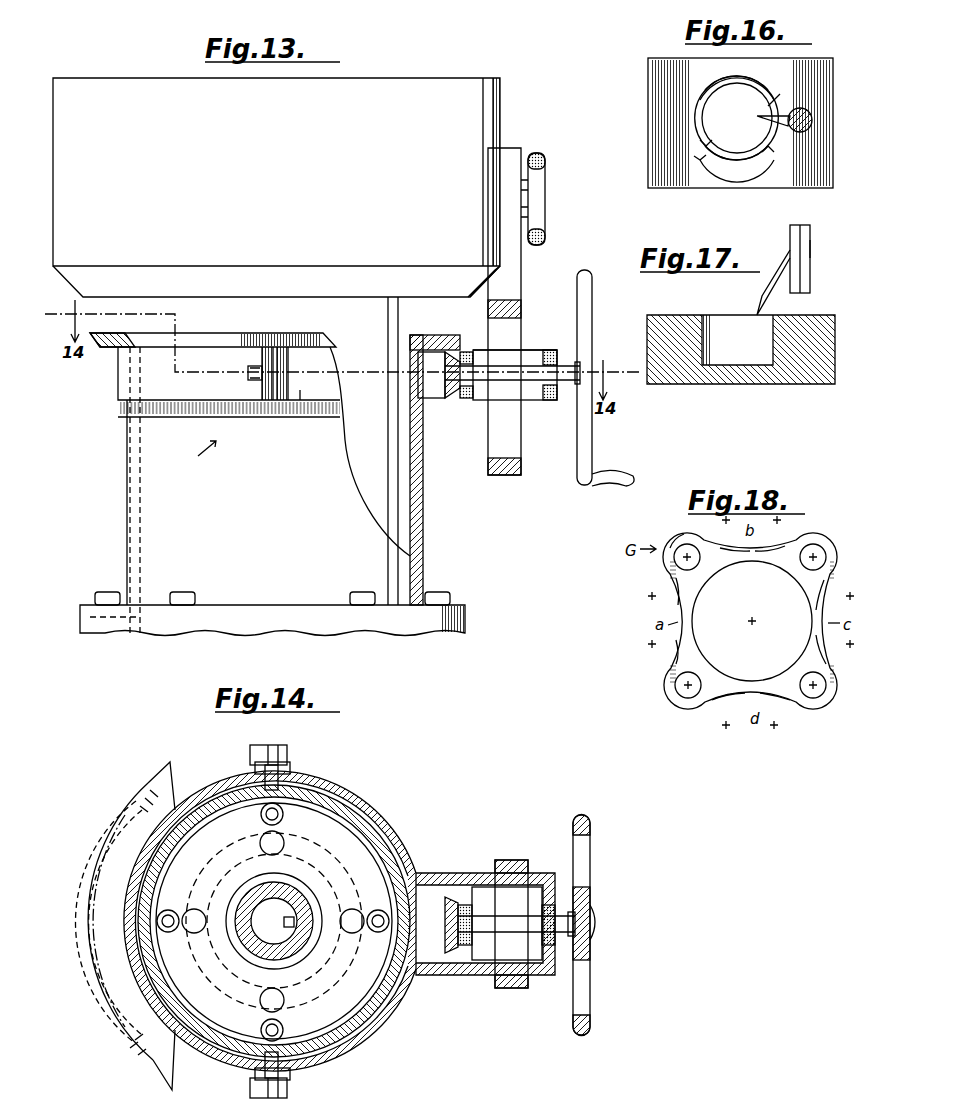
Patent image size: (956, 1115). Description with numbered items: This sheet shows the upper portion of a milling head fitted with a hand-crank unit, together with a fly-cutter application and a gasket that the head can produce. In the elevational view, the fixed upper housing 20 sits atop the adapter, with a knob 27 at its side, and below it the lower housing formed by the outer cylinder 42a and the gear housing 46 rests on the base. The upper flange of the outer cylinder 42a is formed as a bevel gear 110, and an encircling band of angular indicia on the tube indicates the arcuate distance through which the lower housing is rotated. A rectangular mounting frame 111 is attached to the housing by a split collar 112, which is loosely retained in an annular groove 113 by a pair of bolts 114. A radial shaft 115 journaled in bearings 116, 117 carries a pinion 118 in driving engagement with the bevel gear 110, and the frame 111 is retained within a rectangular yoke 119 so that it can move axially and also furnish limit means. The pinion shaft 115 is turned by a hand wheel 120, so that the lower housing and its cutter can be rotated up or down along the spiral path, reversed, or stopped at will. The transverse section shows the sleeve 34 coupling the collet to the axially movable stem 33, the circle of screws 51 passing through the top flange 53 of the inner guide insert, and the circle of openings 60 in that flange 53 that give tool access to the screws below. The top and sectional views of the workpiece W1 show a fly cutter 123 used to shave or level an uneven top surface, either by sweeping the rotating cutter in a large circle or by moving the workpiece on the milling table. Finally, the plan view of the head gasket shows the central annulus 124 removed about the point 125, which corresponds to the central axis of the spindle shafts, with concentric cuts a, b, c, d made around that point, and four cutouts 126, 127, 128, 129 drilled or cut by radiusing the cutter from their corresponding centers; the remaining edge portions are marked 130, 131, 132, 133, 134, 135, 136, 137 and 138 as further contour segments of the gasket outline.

In FIG. 13, the housing 20 is at (53, 160).
In FIG. 13, the knob 27 is at (542, 158).
In FIG. 13, the outer cylinder 42a is at (423, 497).
In FIG. 13, the gear housing 46 is at (80, 615).
In FIG. 13, the bevel gear 110 is at (220, 333).
In FIG. 14, the bevel gear 110 is at (95, 899).
In FIG. 13, the split collar 112 is at (118, 378).
In FIG. 14, the split collar 112 is at (210, 776).
In FIG. 13, the bolts 114 is at (250, 370).
In FIG. 14, the bolts 114 is at (252, 752).
In FIG. 13, the annular groove 113 is at (430, 400).
In FIG. 13, the pinion 118 is at (468, 322).
In FIG. 14, the pinion 118 is at (452, 895).
In FIG. 13, the bearing 116 is at (480, 360).
In FIG. 14, the bearing 116 is at (480, 888).
In FIG. 13, the radial shaft 115 is at (512, 381).
In FIG. 14, the radial shaft 115 is at (516, 914).
In FIG. 13, the bearing 117 is at (560, 337).
In FIG. 14, the bearing 117 is at (552, 950).
In FIG. 13, the rectangular mounting frame 111 is at (532, 400).
In FIG. 14, the rectangular mounting frame 111 is at (440, 975).
In FIG. 13, the rectangular yoke 119 is at (521, 462).
In FIG. 14, the rectangular yoke 119 is at (512, 862).
In FIG. 13, the hand wheel 120 is at (592, 438).
In FIG. 14, the hand wheel 120 is at (575, 818).
In FIG. 14, the sleeve 34 is at (290, 893).
In FIG. 14, the stem 33 is at (292, 930).
In FIG. 14, the screws 51 is at (166, 931).
In FIG. 14, the top flange 53 is at (274, 921).
In FIG. 14, the openings 60 is at (280, 847).
In FIG. 16, the fly cutter 123 is at (770, 114).
In FIG. 17, the fly cutter 123 is at (762, 300).
In FIG. 16, the workpiece W1 is at (842, 80).
In FIG. 17, the workpiece W1 is at (842, 338).
In FIG. 18, the central annulus 124 is at (812, 607).
In FIG. 18, the point 125 is at (748, 620).
In FIG. 18, the cutout 126 is at (696, 548).
In FIG. 18, the cutout 127 is at (820, 548).
In FIG. 18, the cutout 128 is at (816, 700).
In FIG. 18, the cutout 129 is at (690, 700).
In FIG. 18, the edge arc 130 is at (676, 540).
In FIG. 18, the edge arc 131 is at (738, 532).
In FIG. 18, the edge arc 132 is at (785, 546).
In FIG. 18, the edge arc 133 is at (826, 588).
In FIG. 18, the edge arc 134 is at (826, 660).
In FIG. 18, the edge arc 135 is at (775, 694).
In FIG. 18, the edge arc 136 is at (720, 694).
In FIG. 18, the edge arc 137 is at (678, 650).
In FIG. 18, the edge arc 138 is at (678, 586).